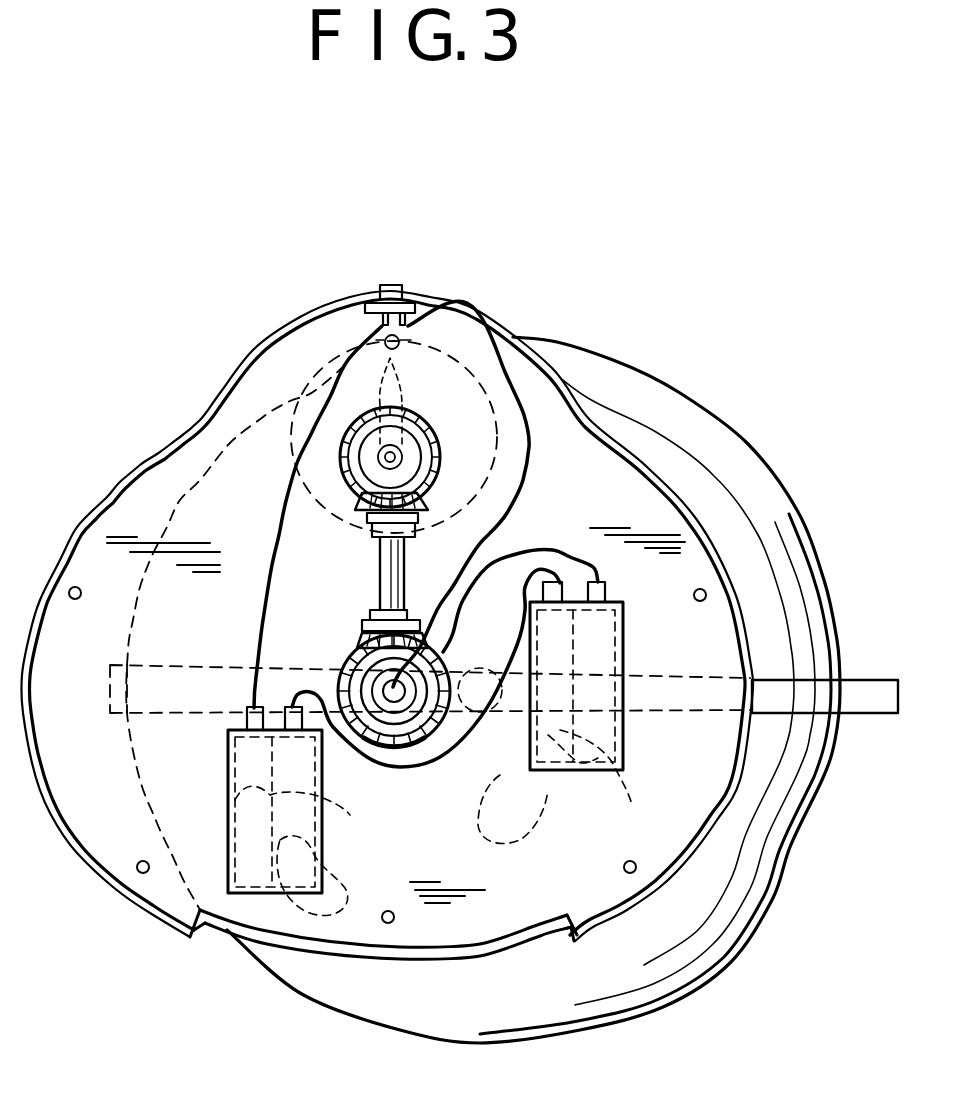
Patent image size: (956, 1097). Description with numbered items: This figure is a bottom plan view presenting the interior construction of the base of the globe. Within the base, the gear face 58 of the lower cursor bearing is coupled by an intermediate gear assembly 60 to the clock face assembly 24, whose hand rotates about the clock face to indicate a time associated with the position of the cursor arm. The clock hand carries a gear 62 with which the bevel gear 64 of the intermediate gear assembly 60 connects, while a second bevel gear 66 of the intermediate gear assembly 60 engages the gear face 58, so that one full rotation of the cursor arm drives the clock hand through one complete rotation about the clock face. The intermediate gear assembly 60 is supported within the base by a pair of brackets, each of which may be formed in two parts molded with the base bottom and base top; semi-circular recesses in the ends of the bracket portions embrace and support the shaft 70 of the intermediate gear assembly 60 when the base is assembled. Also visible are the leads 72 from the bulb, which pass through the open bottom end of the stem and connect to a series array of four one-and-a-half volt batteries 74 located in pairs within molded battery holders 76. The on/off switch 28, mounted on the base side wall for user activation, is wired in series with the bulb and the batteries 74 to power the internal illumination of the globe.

The clock face assembly 24 is at (425, 372).
The on/off switch 28 is at (404, 293).
The leads 72 is at (320, 400).
The gear 62 is at (420, 425).
The bevel gear 64 is at (440, 490).
The intermediate gear assembly 60 is at (378, 552).
The shaft 70 is at (383, 573).
The second bevel gear 66 is at (364, 638).
The gear face 58 is at (450, 670).
The battery holders 76 is at (230, 778).
The batteries 74 is at (232, 800).